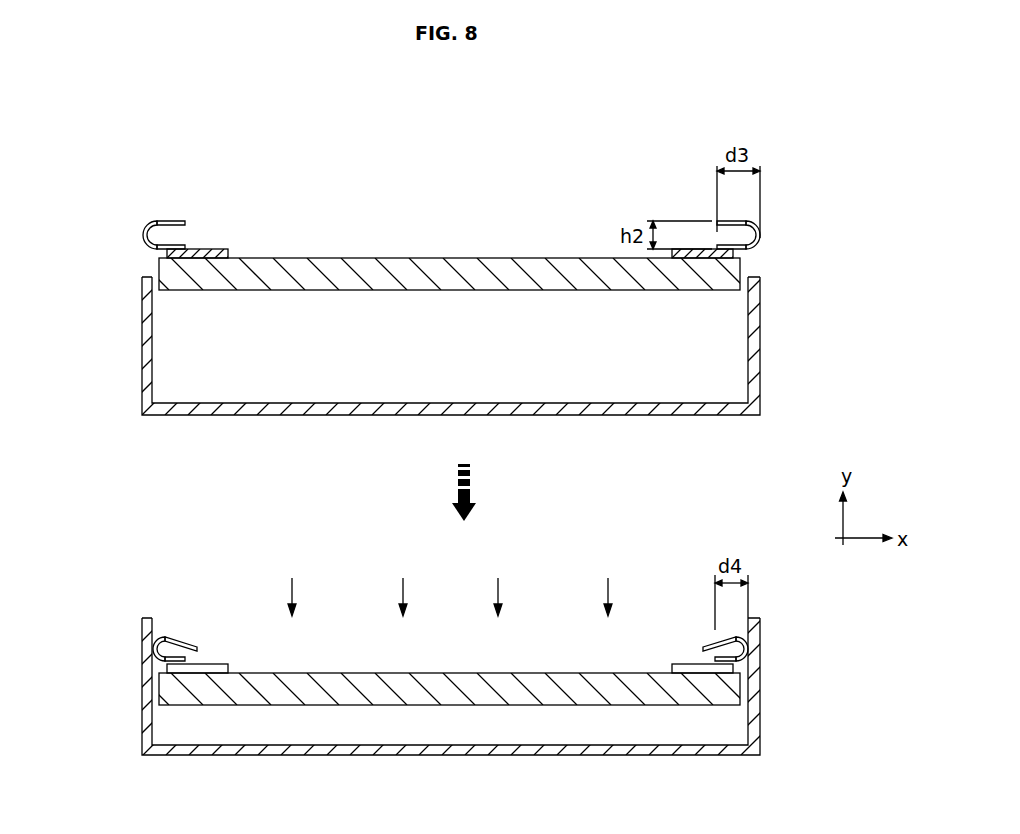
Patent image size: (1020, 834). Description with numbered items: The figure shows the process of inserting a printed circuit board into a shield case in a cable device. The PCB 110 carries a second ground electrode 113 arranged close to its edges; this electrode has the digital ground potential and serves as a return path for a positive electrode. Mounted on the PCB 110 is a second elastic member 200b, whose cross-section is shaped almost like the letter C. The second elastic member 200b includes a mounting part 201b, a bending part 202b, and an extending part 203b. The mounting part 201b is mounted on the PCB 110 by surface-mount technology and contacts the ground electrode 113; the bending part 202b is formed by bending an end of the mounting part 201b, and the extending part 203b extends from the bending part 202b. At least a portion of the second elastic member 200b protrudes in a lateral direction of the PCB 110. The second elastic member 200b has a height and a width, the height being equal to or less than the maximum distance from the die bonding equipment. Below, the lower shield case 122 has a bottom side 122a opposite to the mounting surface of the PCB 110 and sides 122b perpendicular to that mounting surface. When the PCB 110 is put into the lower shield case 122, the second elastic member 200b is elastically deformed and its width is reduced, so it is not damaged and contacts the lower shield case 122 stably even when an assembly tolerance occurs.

The PCB 110 is at (470, 254).
The second ground electrode 113 is at (229, 252).
The lower shield case 122 is at (441, 543).
The bottom side 122a is at (690, 410).
The sides 122b is at (757, 365).
The second elastic member 200b is at (399, 406).
The mounting part 201b is at (186, 246).
The bending part 202b is at (143, 233).
The extending part 203b is at (178, 221).